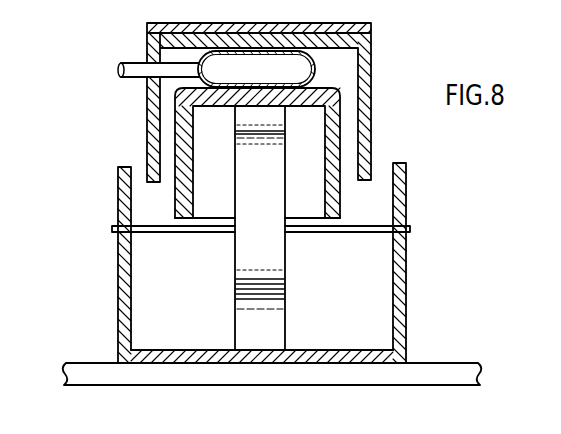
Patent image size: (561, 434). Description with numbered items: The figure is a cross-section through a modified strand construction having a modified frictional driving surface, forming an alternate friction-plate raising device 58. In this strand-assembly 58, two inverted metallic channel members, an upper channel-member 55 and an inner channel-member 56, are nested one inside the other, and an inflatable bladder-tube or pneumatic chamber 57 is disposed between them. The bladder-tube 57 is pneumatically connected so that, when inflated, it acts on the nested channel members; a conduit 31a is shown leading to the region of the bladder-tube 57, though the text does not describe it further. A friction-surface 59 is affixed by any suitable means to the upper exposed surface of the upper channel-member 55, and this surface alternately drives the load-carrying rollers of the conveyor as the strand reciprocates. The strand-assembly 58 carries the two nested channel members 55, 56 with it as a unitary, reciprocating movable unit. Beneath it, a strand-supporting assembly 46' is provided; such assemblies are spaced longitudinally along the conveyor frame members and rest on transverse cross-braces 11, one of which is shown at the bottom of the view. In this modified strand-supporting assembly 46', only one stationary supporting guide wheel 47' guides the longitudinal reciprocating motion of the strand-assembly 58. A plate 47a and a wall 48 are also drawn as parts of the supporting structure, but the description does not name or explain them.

The upper channel-member 55 is at (364, 39).
The friction-surface 59 is at (282, 26).
The inflatable bladder-tube 57 is at (318, 68).
The fluid conduit 31a is at (131, 64).
The lower channel-member 56 is at (175, 134).
The stationary supporting guide wheel 47' is at (257, 228).
The piston plate 47a is at (190, 233).
The left chamber wall 48 is at (122, 313).
The strand-supporting assembly 46' is at (422, 263).
The friction-plate raising device 58 is at (67, 199).
The transverse cross-braces 11 is at (318, 387).